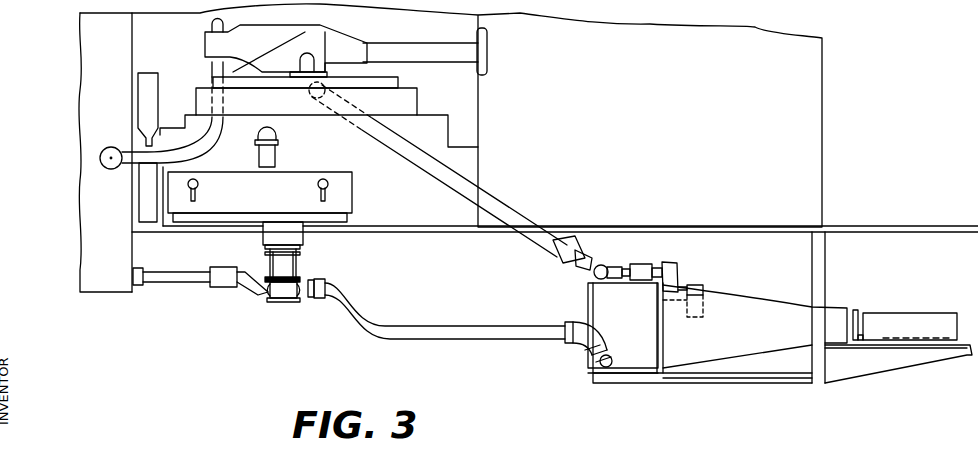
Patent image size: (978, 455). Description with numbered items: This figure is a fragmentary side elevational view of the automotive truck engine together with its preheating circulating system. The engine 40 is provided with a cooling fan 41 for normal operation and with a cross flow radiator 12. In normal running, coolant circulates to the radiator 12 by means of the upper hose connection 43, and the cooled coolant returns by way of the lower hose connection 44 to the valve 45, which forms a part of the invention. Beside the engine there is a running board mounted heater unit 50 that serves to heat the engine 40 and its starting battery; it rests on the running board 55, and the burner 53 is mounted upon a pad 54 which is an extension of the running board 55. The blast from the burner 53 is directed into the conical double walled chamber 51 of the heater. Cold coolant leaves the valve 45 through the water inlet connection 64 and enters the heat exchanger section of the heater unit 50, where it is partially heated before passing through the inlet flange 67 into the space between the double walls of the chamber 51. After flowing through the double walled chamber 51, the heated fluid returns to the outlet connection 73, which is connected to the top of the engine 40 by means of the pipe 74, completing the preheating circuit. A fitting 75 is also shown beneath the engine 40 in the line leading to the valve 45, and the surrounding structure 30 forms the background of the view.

The radiator 12 is at (95, 80).
The housing 30 is at (555, 116).
The engine 40 is at (435, 132).
The cooling fan 41 is at (152, 82).
The upper hose connection 43 is at (193, 144).
The lower hose connection 44 is at (157, 277).
The valve 45 is at (282, 293).
The heater unit 50 is at (753, 298).
The conical double walled chamber 51 is at (780, 316).
The burner 53 is at (912, 322).
The pad 54 is at (920, 349).
The running board 55 is at (730, 378).
The water inlet connection 64 is at (445, 332).
The inlet flange 67 is at (700, 287).
The outlet connection 73 is at (668, 262).
The pipe 74 is at (505, 207).
The connector box 75 is at (298, 242).